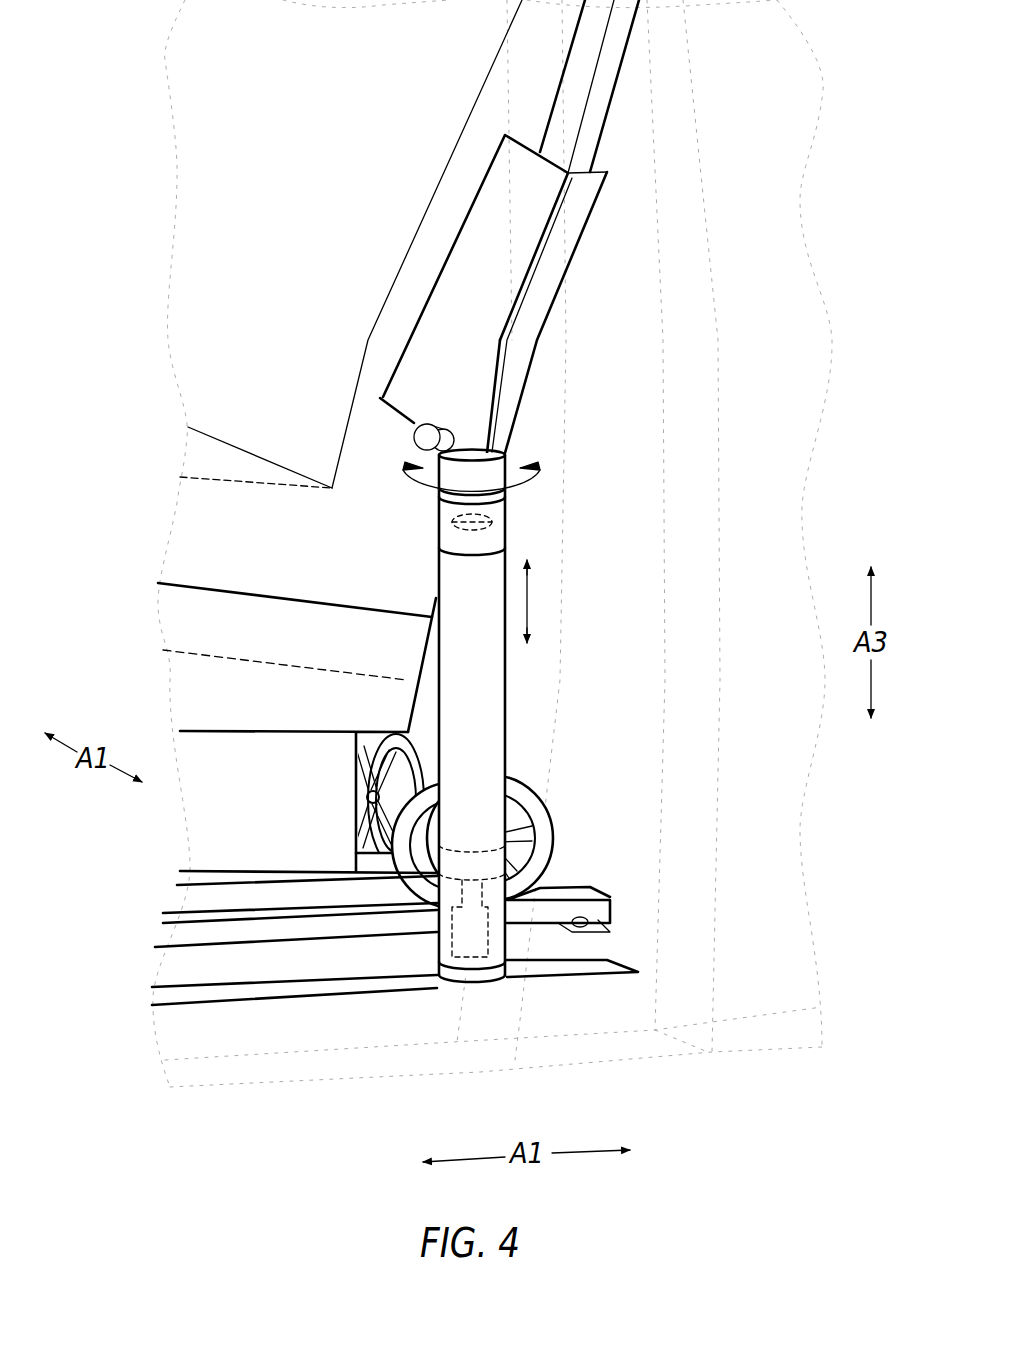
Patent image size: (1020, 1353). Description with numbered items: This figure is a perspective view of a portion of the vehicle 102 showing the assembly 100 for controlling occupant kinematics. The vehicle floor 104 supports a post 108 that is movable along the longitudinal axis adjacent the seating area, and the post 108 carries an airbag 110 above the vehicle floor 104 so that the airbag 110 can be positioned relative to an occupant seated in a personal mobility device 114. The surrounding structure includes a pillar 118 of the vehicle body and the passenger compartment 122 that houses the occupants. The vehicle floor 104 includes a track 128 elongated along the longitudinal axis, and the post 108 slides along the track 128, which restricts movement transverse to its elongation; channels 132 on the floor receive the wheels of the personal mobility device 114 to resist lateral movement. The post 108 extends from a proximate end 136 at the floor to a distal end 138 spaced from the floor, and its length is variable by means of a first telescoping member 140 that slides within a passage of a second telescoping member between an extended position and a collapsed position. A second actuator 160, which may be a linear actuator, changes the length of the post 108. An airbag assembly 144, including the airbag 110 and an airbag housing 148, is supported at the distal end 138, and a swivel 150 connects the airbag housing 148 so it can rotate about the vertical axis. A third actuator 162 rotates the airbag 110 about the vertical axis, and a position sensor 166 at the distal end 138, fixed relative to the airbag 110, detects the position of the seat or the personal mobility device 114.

The assembly 100 is at (656, 1087).
The vehicle 102 is at (318, 1080).
The vehicle floor 104 is at (288, 958).
The post 108 is at (523, 681).
The airbag 110 is at (450, 292).
The personal mobility device 114 is at (212, 508).
The pillar 118 is at (718, 488).
The passenger compartment 122 is at (236, 150).
The track 128 is at (212, 1003).
The channels 132 is at (193, 934).
The proximate end 136 is at (453, 973).
The distal end 138 is at (490, 450).
The first telescoping member 140 is at (447, 540).
The airbag assembly 144 is at (396, 184).
The airbag housing 148 is at (378, 402).
The swivel 150 is at (457, 480).
The second actuator 160 is at (452, 936).
The third actuator 162 is at (492, 525).
The position sensor 166 is at (416, 446).